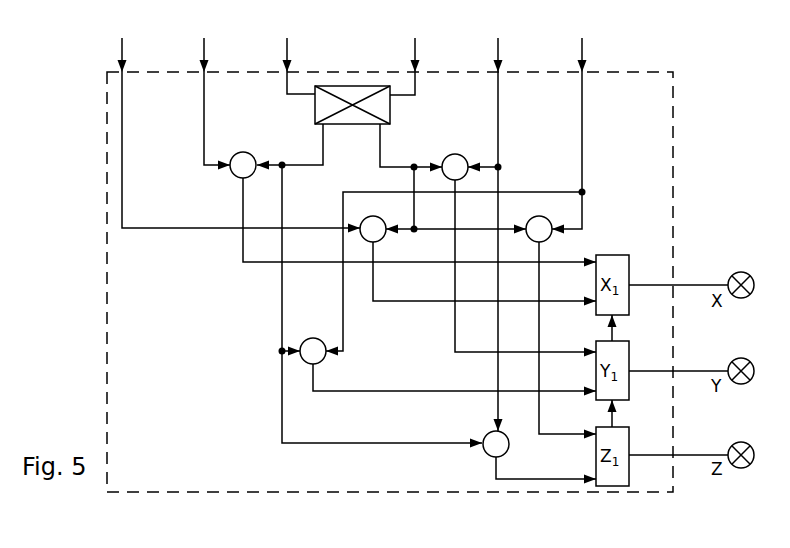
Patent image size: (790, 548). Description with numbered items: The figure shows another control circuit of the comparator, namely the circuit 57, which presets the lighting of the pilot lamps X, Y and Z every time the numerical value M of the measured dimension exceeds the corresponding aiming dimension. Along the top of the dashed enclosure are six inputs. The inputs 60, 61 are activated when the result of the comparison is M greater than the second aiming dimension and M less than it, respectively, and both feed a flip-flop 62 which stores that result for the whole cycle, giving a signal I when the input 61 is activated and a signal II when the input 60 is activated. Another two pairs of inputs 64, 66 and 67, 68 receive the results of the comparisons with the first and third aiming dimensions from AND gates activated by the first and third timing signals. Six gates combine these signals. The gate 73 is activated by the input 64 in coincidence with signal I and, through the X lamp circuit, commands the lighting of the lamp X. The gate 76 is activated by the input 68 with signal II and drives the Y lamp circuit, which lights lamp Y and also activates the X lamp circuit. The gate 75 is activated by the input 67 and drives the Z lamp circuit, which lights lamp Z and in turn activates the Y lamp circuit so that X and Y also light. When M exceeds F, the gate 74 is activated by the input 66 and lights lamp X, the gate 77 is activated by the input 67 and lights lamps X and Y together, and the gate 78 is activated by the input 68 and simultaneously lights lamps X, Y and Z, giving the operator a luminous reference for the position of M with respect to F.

The circuit 57 is at (443, 503).
The input 60 is at (289, 57).
The input 61 is at (416, 57).
The flip-flop 62 is at (382, 110).
The input 64 is at (206, 95).
The input 66 is at (229, 126).
The input 67 is at (467, 188).
The input 68 is at (496, 225).
The gate 73 is at (248, 152).
The gate 74 is at (381, 239).
The gate 75 is at (546, 238).
The gate 76 is at (457, 154).
The gate 77 is at (322, 360).
The gate 78 is at (505, 449).